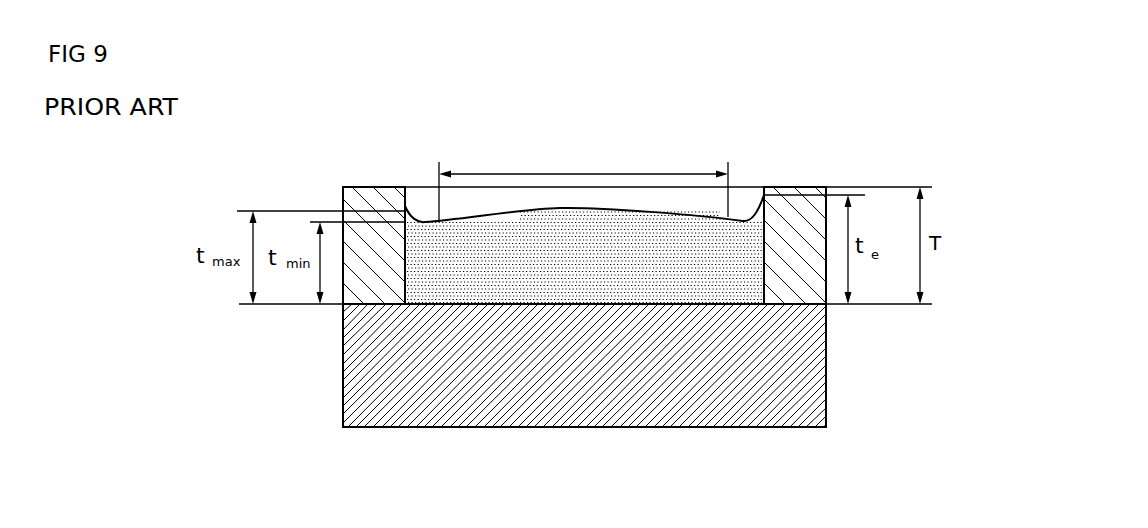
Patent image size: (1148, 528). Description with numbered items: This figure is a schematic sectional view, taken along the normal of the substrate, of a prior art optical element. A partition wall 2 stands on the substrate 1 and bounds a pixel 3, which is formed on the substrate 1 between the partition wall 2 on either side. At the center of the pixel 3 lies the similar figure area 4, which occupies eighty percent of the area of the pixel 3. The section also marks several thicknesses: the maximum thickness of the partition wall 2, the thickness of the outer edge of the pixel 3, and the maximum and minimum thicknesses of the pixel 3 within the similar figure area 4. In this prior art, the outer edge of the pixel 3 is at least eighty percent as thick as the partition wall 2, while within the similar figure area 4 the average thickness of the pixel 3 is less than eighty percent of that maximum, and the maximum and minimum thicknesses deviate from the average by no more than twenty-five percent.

The substrate 1 is at (735, 385).
The partition wall 2 is at (380, 188).
The pixel 3 is at (596, 287).
The similar figure area 4 is at (585, 173).